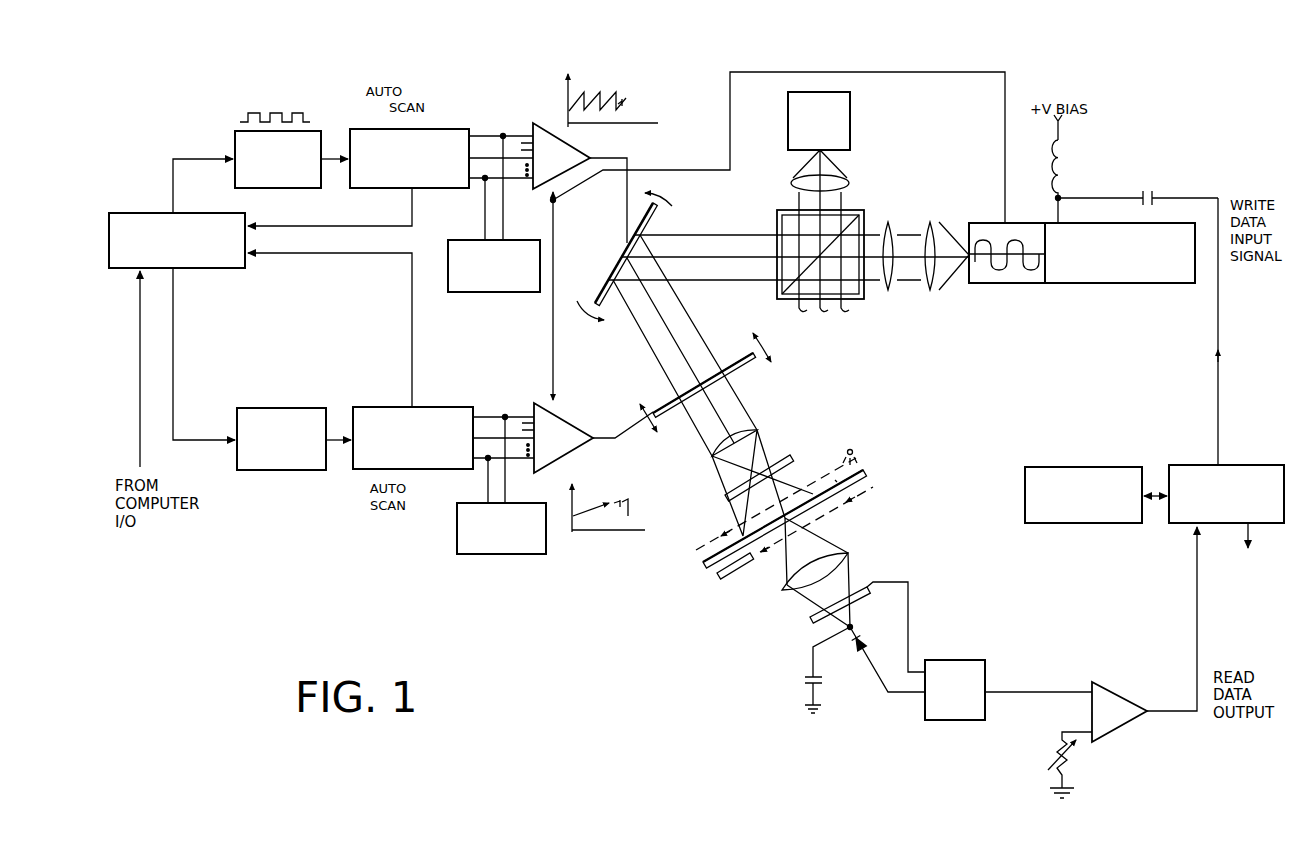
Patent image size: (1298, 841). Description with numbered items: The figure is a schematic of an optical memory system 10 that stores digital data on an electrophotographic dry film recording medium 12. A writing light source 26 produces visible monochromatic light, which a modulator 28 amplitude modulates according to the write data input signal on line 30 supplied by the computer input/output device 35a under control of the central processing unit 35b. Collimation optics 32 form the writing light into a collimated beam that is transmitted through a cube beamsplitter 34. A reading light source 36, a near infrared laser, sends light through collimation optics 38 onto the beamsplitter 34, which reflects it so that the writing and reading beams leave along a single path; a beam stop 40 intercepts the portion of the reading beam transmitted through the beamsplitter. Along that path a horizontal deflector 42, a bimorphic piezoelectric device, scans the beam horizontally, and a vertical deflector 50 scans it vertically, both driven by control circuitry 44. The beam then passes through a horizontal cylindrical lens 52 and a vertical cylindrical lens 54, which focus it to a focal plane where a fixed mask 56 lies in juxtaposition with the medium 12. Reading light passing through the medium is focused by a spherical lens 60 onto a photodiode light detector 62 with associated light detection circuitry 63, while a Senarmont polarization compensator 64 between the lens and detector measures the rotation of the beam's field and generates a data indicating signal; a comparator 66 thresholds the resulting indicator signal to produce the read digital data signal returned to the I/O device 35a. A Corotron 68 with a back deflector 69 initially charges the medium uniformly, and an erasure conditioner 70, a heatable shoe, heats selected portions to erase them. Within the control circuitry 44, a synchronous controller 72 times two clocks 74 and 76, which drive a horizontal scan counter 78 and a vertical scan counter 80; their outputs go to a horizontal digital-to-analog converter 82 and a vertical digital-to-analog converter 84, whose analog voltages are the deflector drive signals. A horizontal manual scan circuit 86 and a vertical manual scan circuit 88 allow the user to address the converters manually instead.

The optical memory system 10 is at (646, 632).
The recording medium 12 is at (705, 569).
The writing light source 26 is at (1122, 285).
The modulator 28 is at (1013, 285).
The write data input signal line 30 is at (1181, 197).
The collimation optics 32 is at (922, 300).
The cube beamsplitter 34 is at (862, 300).
The input/output device 35a is at (1187, 464).
The central processing unit 35b is at (1076, 466).
The reading light source 36 is at (851, 108).
The collimation optics 38 is at (848, 181).
The beam stop 40 is at (842, 312).
The horizontal deflector 42 is at (616, 265).
The control circuitry 44 is at (268, 494).
The vertical deflector 50 is at (760, 372).
The horizontal cylindrical lens 52 is at (762, 432).
The vertical cylindrical lens 54 is at (778, 464).
The fixed mask 56 is at (705, 560).
The spherical lens 60 is at (792, 590).
The light detector 62 is at (858, 652).
The light detection circuitry 63 is at (960, 660).
The Senarmont polarization compensator 64 is at (820, 620).
The comparator 66 is at (1108, 688).
The Corotron 68 is at (853, 449).
The back deflector 69 is at (835, 480).
The erasure conditioner 70 is at (728, 578).
The synchronous controller 72 is at (150, 213).
The horizontal clock 74 is at (302, 189).
The vertical clock 76 is at (288, 406).
The horizontal scan counter 78 is at (445, 190).
The vertical scan counter 80 is at (450, 405).
The horizontal digital-to-analog converter 82 is at (550, 123).
The vertical digital-to-analog converter 84 is at (578, 424).
The horizontal manual scan circuit 86 is at (494, 294).
The vertical manual scan circuit 88 is at (500, 557).